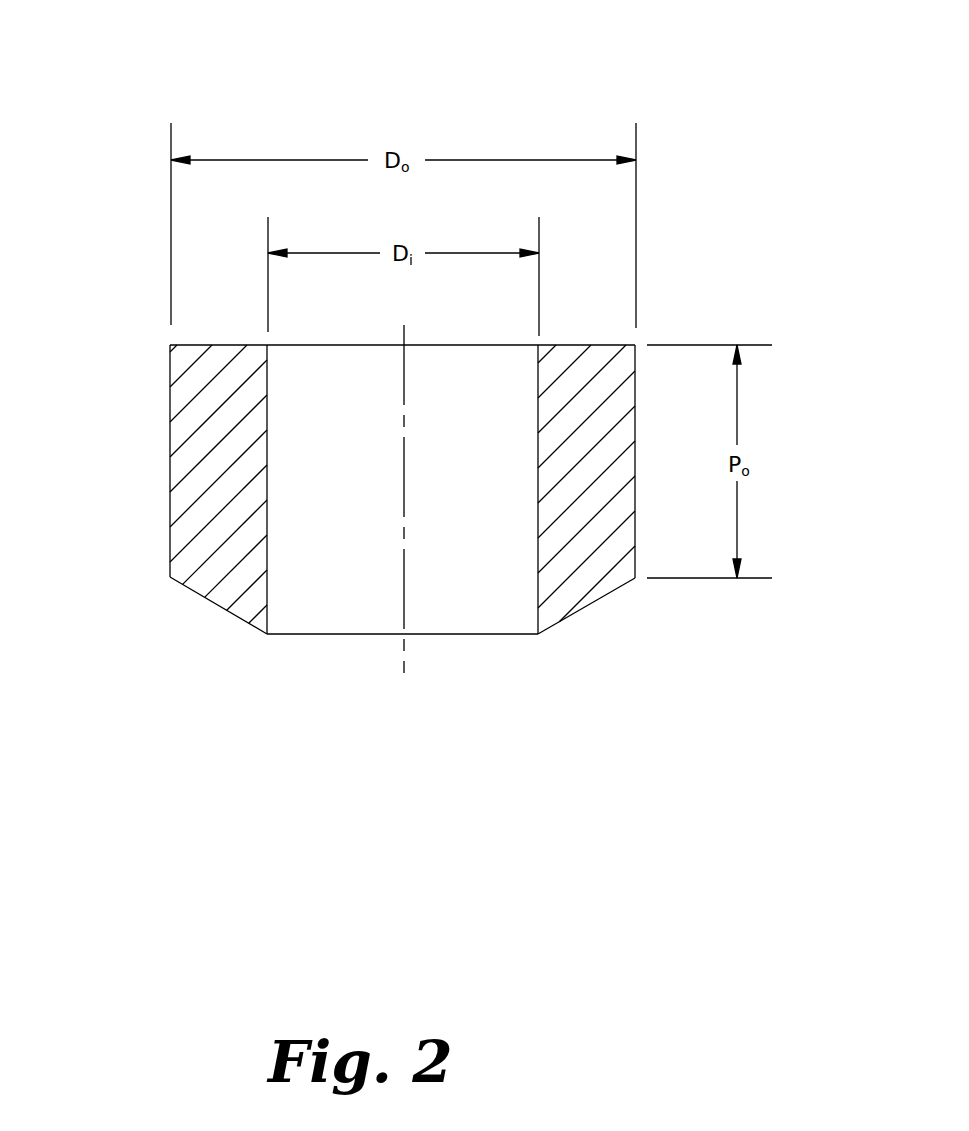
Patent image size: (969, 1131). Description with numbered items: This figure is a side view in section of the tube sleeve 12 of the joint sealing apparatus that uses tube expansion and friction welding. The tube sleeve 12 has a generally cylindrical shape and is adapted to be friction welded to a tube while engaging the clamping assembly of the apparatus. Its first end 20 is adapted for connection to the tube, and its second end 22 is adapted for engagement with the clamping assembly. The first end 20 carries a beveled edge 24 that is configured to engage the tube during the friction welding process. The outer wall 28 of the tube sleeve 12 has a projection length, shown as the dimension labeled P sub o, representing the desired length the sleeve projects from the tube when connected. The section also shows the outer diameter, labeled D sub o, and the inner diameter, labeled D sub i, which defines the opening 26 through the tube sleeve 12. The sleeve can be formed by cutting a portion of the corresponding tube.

The tube sleeve 12 is at (262, 90).
The first end 20 is at (480, 634).
The second end 22 is at (575, 345).
The beveled edge 24 is at (218, 605).
The opening 26 is at (360, 595).
The outer wall 28 is at (170, 457).